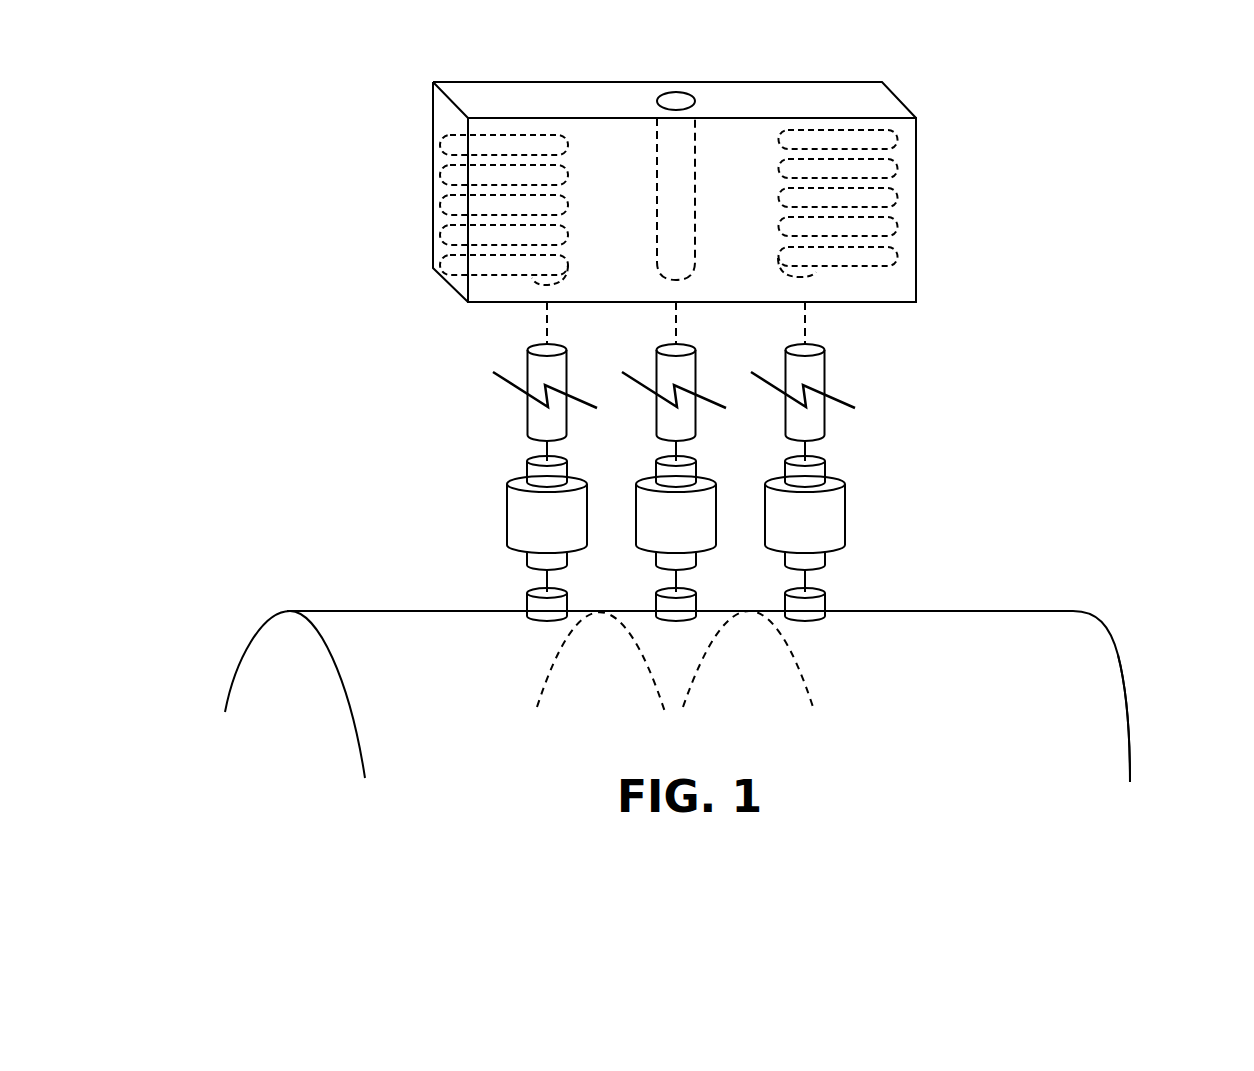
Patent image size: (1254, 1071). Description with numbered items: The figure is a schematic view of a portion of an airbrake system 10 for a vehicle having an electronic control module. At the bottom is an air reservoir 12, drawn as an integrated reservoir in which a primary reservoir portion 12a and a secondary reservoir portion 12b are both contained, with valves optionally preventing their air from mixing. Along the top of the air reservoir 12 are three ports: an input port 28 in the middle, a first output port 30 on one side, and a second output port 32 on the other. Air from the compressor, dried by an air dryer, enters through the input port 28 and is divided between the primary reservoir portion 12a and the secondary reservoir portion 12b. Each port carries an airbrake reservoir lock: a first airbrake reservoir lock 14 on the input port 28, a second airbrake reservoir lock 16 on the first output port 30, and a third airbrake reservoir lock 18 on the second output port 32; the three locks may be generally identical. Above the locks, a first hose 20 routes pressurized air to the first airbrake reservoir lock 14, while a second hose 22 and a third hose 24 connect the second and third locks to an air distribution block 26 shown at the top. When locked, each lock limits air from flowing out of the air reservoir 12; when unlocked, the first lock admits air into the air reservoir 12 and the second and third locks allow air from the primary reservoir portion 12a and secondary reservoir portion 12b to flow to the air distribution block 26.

The airbrake system 10 is at (1032, 100).
The air reservoir 12 is at (1103, 623).
The primary reservoir portion 12a is at (358, 625).
The secondary reservoir portion 12b is at (1082, 704).
The first airbrake reservoir lock 14 is at (650, 522).
The second airbrake reservoir lock 16 is at (523, 515).
The third airbrake reservoir lock 18 is at (788, 522).
The first hose 20 is at (685, 367).
The second hose 22 is at (532, 368).
The third hose 24 is at (814, 367).
The air distribution block 26 is at (877, 95).
The input port 28 is at (683, 593).
The first output port 30 is at (543, 593).
The second output port 32 is at (812, 607).